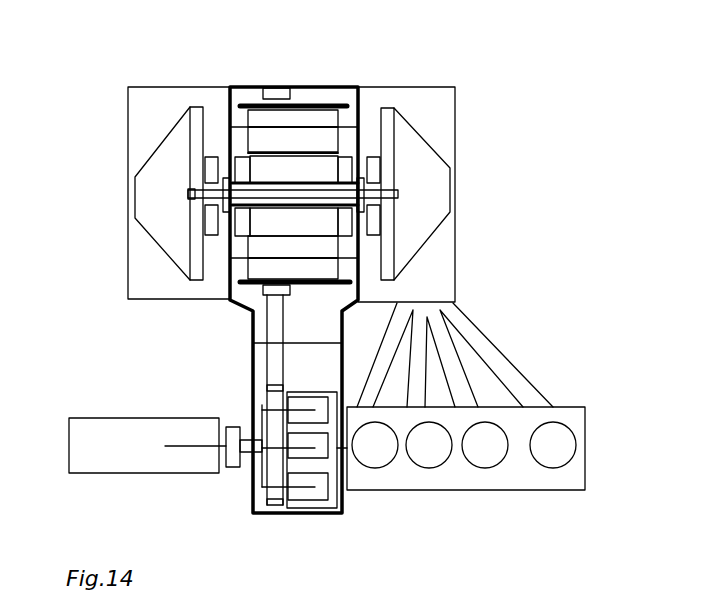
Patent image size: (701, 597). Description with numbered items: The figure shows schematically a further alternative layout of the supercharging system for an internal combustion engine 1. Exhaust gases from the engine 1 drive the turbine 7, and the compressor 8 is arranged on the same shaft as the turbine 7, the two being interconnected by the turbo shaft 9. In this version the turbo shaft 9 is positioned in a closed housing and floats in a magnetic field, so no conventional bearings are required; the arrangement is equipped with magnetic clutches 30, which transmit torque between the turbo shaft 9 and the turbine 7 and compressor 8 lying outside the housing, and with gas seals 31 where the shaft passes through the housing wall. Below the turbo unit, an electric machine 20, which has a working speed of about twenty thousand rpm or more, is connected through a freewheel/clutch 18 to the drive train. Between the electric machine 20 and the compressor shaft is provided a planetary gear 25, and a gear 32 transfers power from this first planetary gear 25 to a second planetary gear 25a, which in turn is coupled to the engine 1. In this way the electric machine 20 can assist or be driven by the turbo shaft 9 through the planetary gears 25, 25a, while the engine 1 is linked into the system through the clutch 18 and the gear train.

The engine 1 is at (585, 467).
The turbine 7 is at (414, 135).
The compressor 8 is at (177, 137).
The turbo shaft 9 is at (313, 192).
The freewheel/clutch 18 is at (237, 432).
The electric machine 20 is at (135, 422).
The planetary gear 25 is at (304, 87).
The second planetary gear 25a is at (343, 507).
The magnetic clutches 30 is at (372, 158).
The gas seals 31 is at (226, 178).
The gear 32 is at (278, 316).